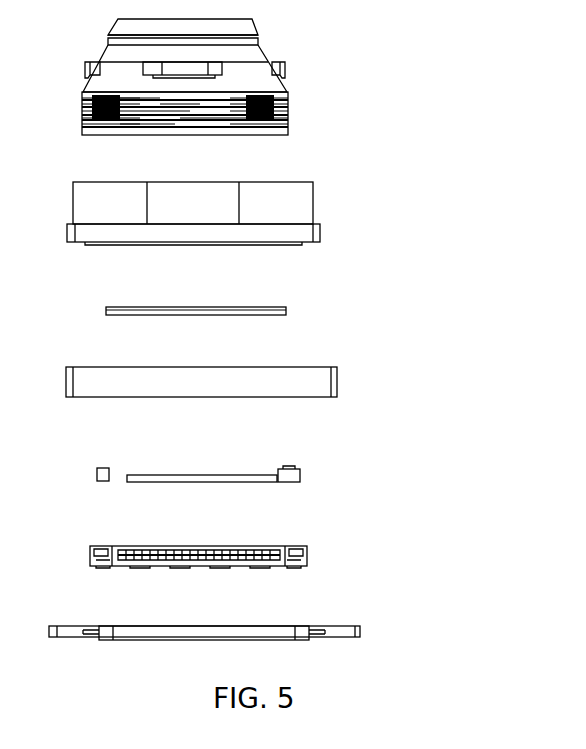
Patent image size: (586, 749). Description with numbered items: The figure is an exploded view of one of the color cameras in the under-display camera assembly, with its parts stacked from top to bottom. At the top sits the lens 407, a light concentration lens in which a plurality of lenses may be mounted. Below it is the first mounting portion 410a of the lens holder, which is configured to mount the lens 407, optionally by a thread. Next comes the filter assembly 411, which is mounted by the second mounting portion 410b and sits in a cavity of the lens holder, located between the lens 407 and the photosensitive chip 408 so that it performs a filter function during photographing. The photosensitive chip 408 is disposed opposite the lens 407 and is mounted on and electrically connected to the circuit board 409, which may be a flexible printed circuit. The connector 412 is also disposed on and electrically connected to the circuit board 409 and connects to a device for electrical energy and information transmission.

The lens 407 is at (302, 83).
The first mounting portion 410a is at (330, 212).
The filter assembly 411 is at (303, 312).
The second mounting portion 410b is at (343, 385).
The photosensitive chip 408 is at (311, 476).
The connector 412 is at (308, 563).
The circuit board 409 is at (363, 633).